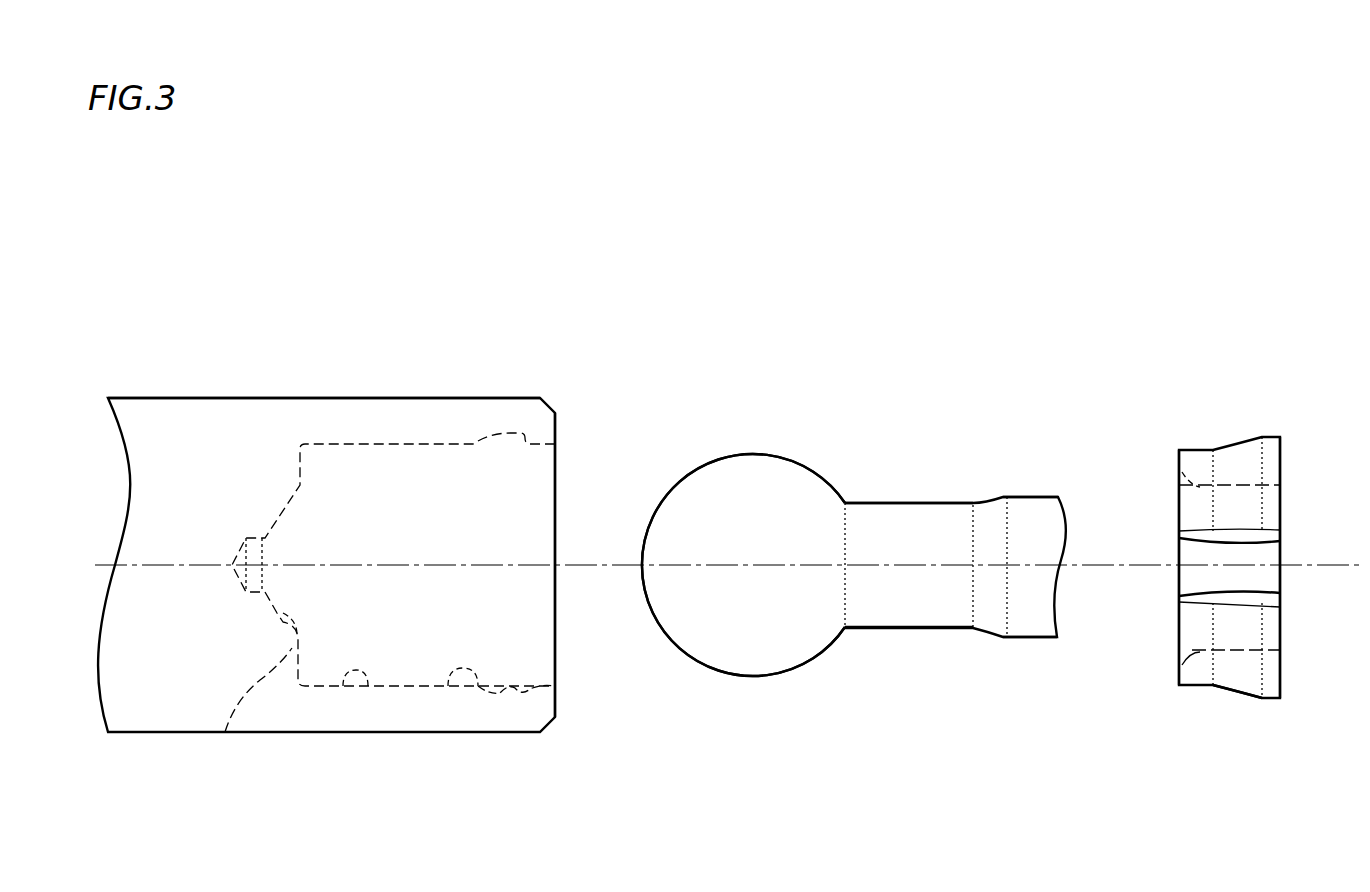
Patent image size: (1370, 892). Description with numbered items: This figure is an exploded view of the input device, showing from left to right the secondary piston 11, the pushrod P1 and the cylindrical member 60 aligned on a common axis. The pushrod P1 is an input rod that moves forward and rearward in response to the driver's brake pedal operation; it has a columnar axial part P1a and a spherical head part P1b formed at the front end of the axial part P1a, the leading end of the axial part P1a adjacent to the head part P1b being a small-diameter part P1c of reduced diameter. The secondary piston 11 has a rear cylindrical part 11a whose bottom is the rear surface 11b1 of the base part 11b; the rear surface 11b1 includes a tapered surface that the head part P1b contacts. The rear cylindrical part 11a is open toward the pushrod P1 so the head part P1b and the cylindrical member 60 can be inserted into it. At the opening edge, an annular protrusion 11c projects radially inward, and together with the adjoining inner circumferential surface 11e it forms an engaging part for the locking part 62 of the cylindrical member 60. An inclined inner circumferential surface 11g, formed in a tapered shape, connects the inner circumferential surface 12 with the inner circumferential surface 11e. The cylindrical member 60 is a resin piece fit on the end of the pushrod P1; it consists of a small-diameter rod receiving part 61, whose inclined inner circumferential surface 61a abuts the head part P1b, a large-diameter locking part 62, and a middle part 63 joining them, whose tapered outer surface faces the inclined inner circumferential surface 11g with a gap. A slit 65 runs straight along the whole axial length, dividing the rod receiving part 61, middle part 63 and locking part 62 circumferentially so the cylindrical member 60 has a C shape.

The secondary piston 11 is at (392, 345).
The rear cylindrical part 11a is at (378, 412).
The base part 11b is at (228, 410).
The rear surface of the base part 11b1 is at (225, 732).
The annular protrusion 11c is at (558, 702).
The inner circumferential surface of the rear cylindrical part 11e is at (497, 692).
The inclined inner circumferential surface 11g is at (450, 690).
The inner circumferential surface 12 is at (368, 690).
The pushrod P1 is at (852, 440).
The axial part P1a is at (1032, 505).
The spherical head part P1b is at (752, 462).
The small-diameter part P1c is at (902, 513).
The cylindrical member 60 is at (1233, 424).
The rod receiving part 61 is at (1193, 688).
The inner circumferential surface of the rod receiving part 61a is at (1179, 481).
The locking part 62 is at (1272, 700).
The middle part 63 is at (1238, 697).
The slit 65 is at (1296, 555).